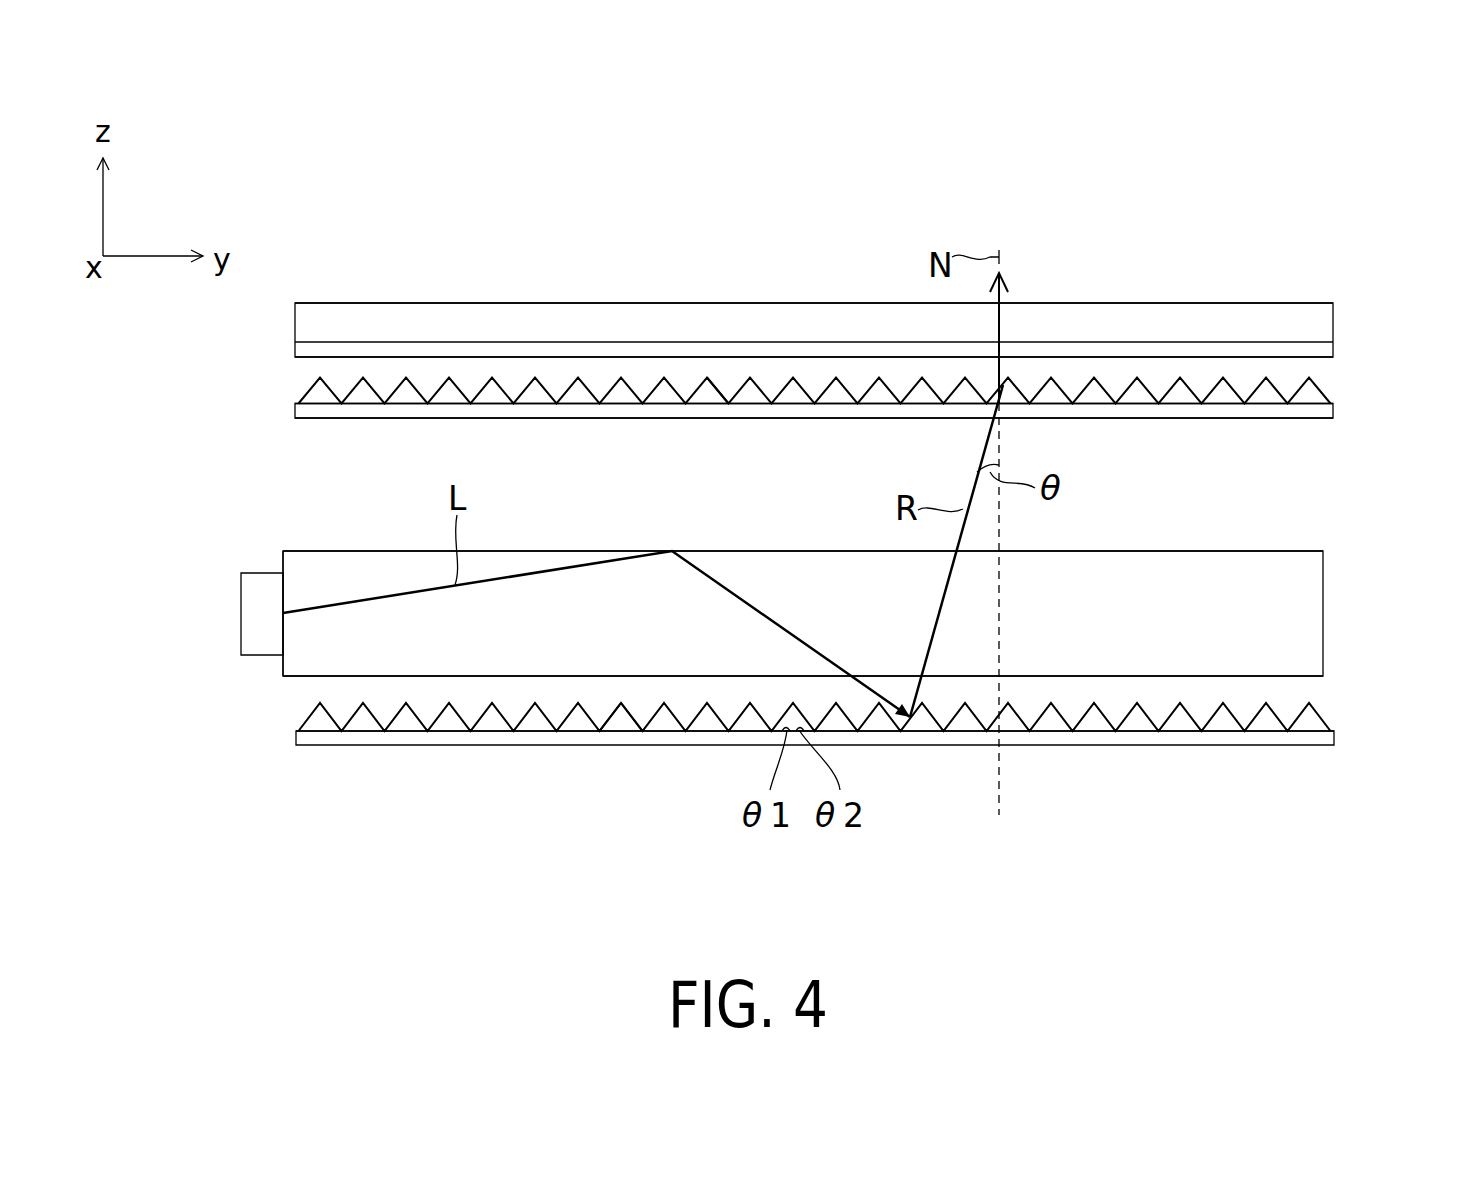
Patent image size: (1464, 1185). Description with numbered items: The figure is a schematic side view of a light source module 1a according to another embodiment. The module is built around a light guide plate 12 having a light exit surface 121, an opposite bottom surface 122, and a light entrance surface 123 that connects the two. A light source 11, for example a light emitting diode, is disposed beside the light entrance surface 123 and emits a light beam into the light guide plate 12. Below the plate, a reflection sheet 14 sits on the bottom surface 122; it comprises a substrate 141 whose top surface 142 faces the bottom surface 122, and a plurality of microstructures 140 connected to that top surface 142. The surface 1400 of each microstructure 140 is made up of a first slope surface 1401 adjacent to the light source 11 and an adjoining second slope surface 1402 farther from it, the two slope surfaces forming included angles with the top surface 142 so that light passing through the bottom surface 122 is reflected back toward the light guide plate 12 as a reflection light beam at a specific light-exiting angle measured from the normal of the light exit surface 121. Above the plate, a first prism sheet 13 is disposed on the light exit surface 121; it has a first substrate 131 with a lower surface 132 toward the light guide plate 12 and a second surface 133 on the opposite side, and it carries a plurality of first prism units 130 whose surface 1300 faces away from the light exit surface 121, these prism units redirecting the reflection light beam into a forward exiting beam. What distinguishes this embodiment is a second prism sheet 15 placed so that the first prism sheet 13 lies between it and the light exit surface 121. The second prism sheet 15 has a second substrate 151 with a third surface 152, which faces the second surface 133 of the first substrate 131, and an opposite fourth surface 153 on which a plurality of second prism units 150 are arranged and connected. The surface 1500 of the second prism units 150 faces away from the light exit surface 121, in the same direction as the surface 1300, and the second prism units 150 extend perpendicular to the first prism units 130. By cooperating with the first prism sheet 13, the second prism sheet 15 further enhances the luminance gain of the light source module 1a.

The light source module 1a is at (1290, 198).
The light source 11 is at (258, 613).
The light guide plate 12 is at (796, 617).
The light exit surface 121 is at (306, 537).
The bottom surface 122 is at (306, 690).
The light entrance surface 123 is at (298, 583).
The first prism sheet 13 is at (809, 337).
The first prism units 130 is at (627, 398).
The surface 1300 is at (722, 374).
The first substrate 131 is at (545, 415).
The bottom surface of first substrate 132 is at (314, 432).
The second surface 133 is at (452, 416).
The reflection sheet 14 is at (871, 775).
The microstructures 140 is at (493, 722).
The surface 1400 is at (621, 805).
The first slope surface 1401 is at (603, 713).
The second slope surface 1402 is at (641, 713).
The substrate 141 is at (328, 742).
The top surface 142 is at (413, 743).
The second prism sheet 15 is at (809, 306).
The second prism units 150 is at (1212, 337).
The surface 1500 is at (1308, 320).
The second substrate 151 is at (1143, 352).
The third surface 152 is at (314, 370).
The fourth surface 153 is at (1076, 352).